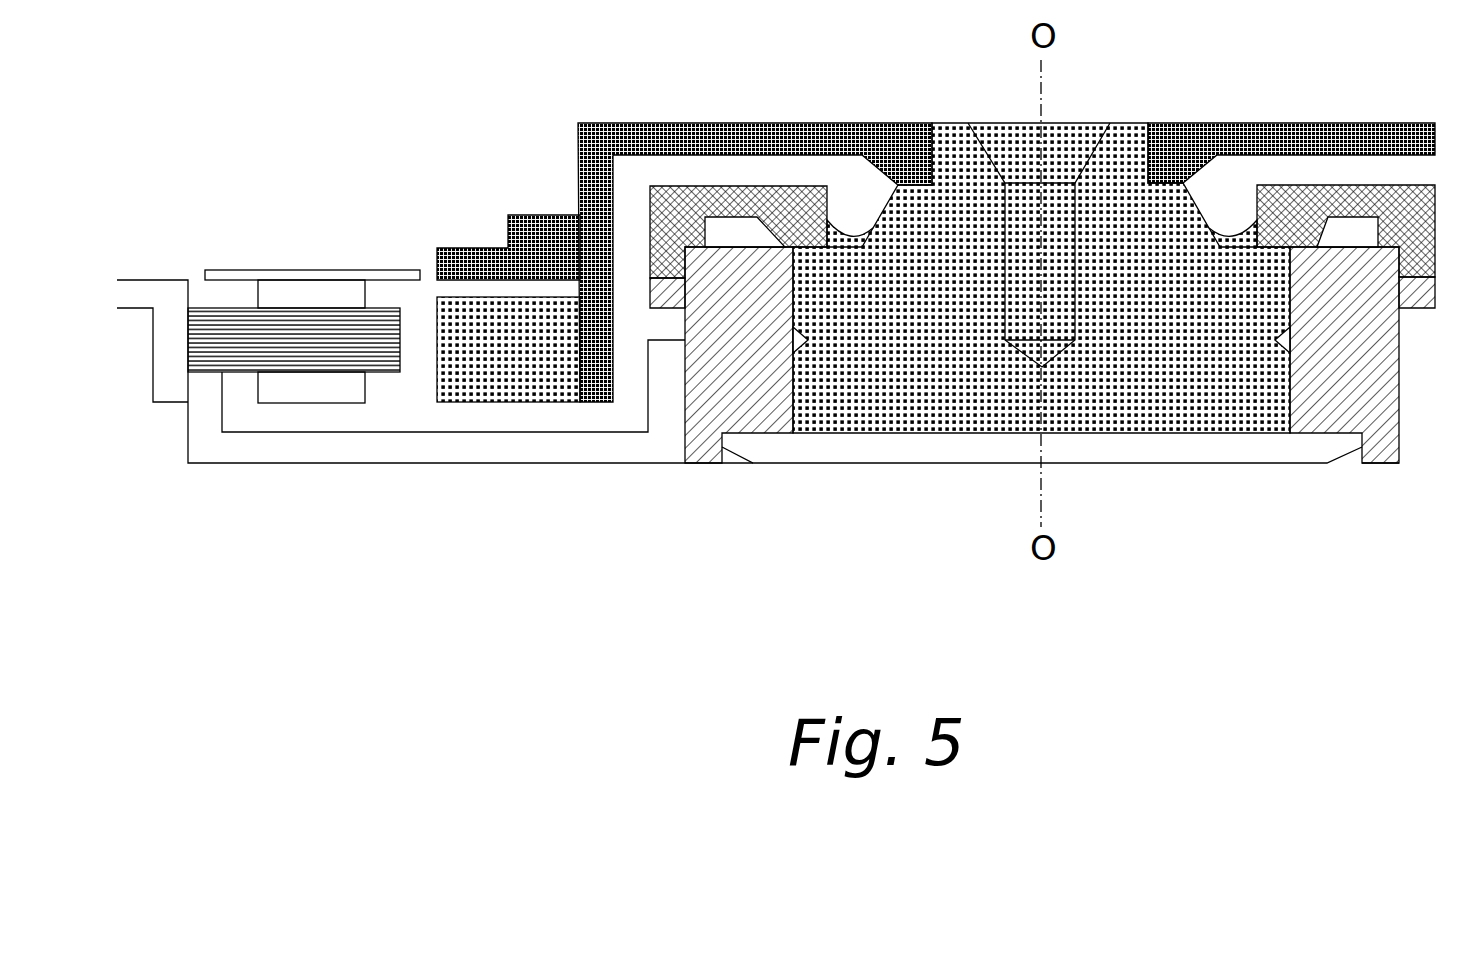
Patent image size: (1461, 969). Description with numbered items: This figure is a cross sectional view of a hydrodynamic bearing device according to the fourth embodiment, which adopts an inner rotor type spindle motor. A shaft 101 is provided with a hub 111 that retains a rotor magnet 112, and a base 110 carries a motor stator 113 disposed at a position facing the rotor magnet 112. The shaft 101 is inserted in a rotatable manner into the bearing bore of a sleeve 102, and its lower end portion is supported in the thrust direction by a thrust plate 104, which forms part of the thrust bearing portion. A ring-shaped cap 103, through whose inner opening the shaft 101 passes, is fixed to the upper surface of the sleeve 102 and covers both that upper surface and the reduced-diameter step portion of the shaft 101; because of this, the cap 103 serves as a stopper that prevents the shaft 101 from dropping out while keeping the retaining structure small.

The shaft 101 is at (1135, 250).
The sleeve 102 is at (733, 297).
The cap 103 is at (738, 217).
The thrust plate 104 is at (873, 453).
The base 110 is at (465, 452).
The hub 111 is at (597, 150).
The rotor magnet 112 is at (487, 340).
The motor stator 113 is at (316, 340).